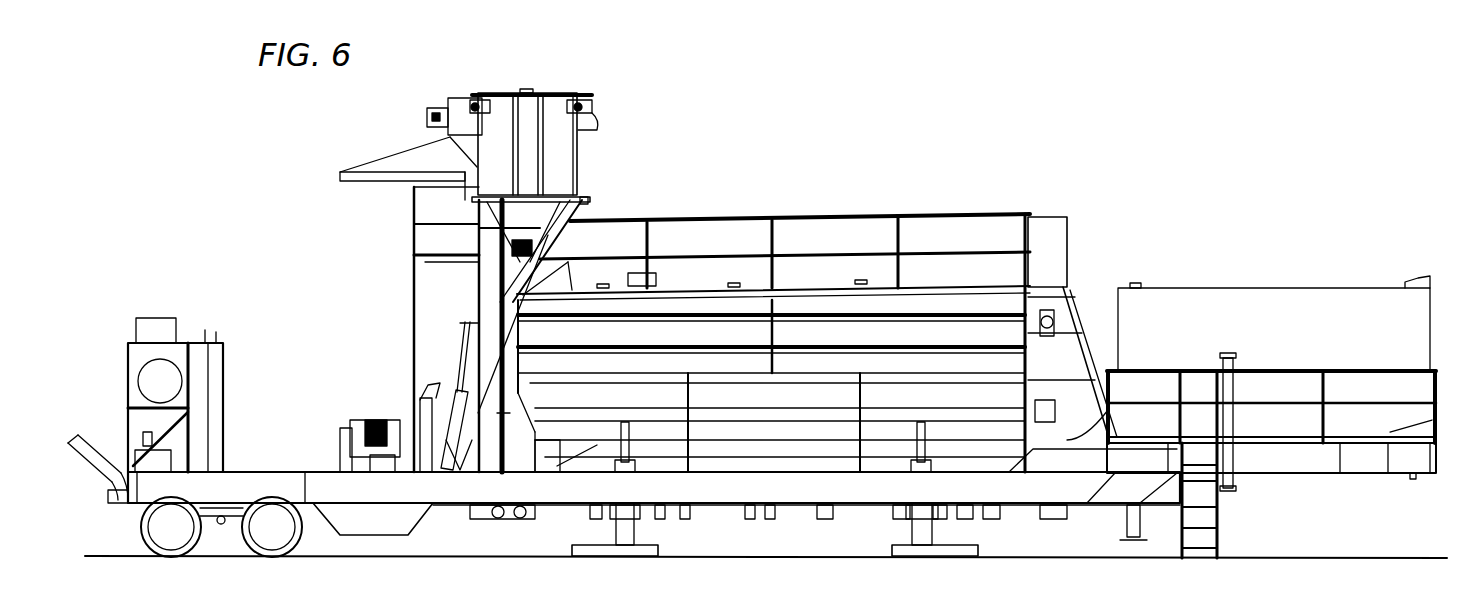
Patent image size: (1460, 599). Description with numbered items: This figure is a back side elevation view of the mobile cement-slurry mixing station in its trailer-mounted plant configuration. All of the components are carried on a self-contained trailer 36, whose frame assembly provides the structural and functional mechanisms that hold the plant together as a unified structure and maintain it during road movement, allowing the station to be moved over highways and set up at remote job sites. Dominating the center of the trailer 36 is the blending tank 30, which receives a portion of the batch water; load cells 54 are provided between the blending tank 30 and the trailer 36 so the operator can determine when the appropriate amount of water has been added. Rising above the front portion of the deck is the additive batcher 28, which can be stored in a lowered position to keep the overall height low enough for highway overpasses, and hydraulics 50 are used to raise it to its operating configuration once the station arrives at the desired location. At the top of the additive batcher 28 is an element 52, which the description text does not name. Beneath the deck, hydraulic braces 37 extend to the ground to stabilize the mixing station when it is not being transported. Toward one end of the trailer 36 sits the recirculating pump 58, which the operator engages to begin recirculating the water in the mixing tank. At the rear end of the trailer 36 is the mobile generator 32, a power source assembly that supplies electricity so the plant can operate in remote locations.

The additive batcher 28 is at (594, 188).
The blending tank 30 is at (1003, 304).
The mobile generator 32 is at (1262, 292).
The trailer 36 is at (300, 466).
The hydraulic braces 37 is at (600, 556).
The hydraulics 50 is at (452, 418).
The hopper 52 is at (553, 93).
The load cells 54 is at (640, 463).
The recirculating pump 58 is at (365, 418).